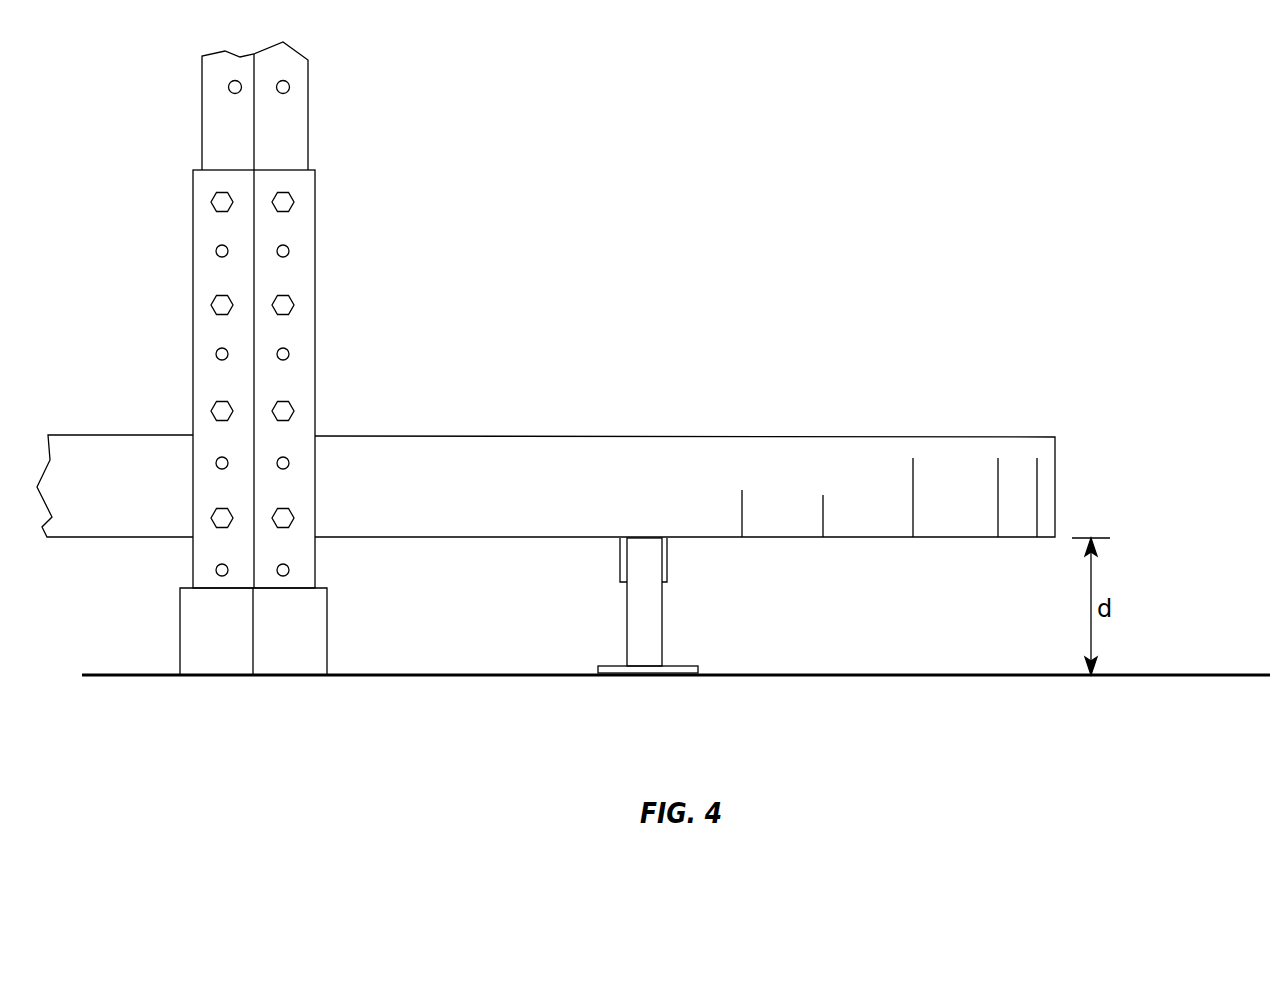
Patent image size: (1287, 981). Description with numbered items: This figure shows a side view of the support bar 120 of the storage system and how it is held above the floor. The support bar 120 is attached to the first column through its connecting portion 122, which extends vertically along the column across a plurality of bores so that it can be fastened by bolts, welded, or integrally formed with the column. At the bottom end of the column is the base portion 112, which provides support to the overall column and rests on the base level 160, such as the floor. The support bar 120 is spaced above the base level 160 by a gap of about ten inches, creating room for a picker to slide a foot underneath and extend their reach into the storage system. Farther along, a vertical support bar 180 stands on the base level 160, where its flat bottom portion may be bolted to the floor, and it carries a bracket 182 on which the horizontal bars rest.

The base portion 112 is at (222, 640).
The support bar 120 is at (948, 435).
The connecting portion 122 is at (208, 495).
The base level 160 is at (1145, 674).
The vertical support bar 180 is at (640, 625).
The bracket 182 is at (666, 559).